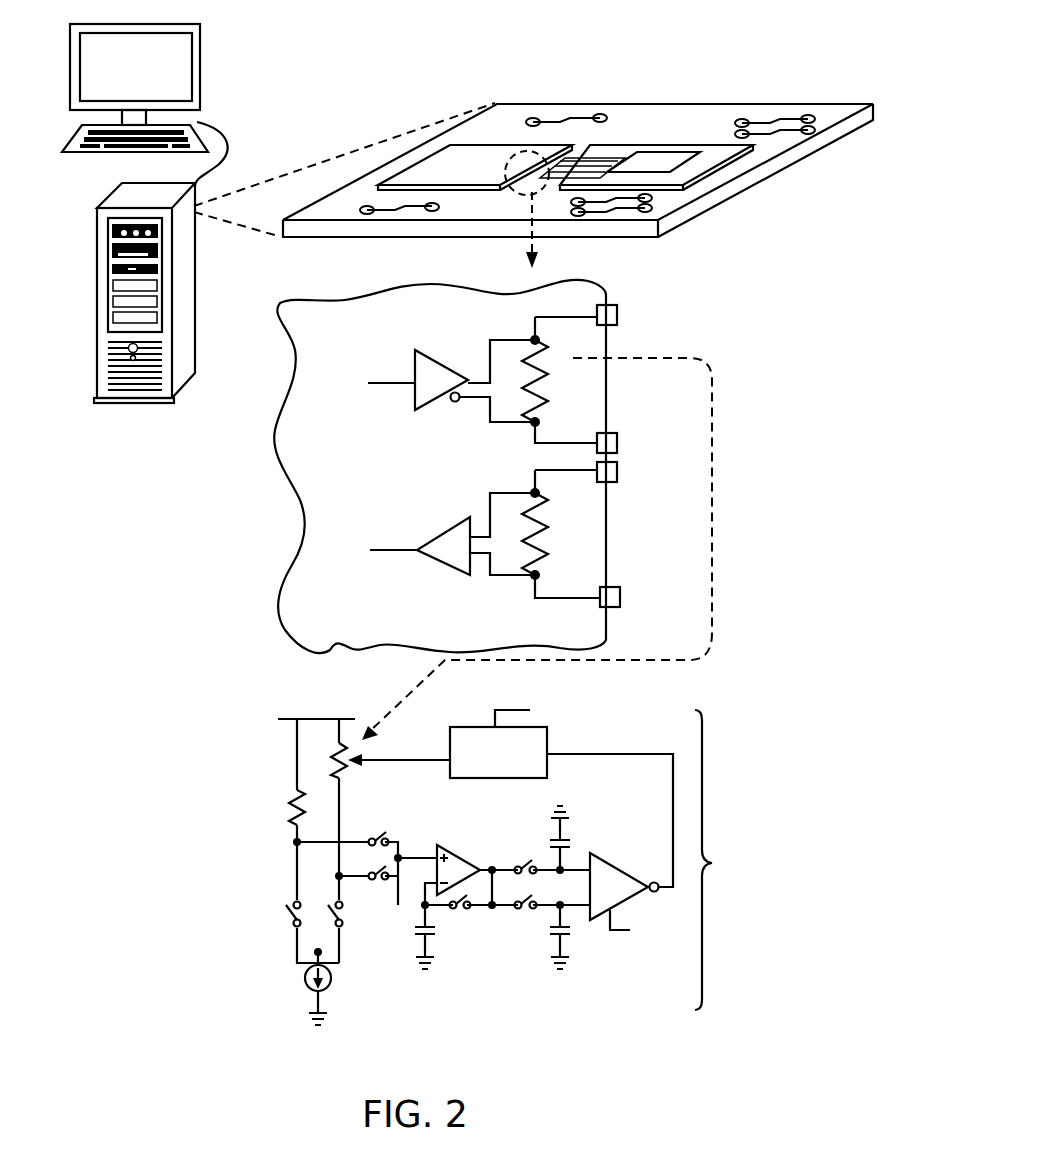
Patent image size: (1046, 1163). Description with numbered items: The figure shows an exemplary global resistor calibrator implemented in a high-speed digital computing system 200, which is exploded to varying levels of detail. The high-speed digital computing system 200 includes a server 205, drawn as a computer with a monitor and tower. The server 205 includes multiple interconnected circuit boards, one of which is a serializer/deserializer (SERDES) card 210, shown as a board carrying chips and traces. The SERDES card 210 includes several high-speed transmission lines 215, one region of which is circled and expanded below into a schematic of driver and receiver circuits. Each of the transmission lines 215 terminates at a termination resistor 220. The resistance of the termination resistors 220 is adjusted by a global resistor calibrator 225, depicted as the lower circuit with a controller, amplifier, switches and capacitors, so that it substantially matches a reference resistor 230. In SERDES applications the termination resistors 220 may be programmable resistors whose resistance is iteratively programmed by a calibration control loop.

The high-speed digital computing system 200 is at (585, 65).
The server 205 is at (118, 403).
The serializer/deserializer (SERDES) card 210 is at (708, 104).
The high-speed transmission lines 215 is at (518, 192).
The termination resistor 220 is at (570, 410).
The global resistor calibrator 225 is at (525, 867).
The reference resistor 230 is at (268, 798).